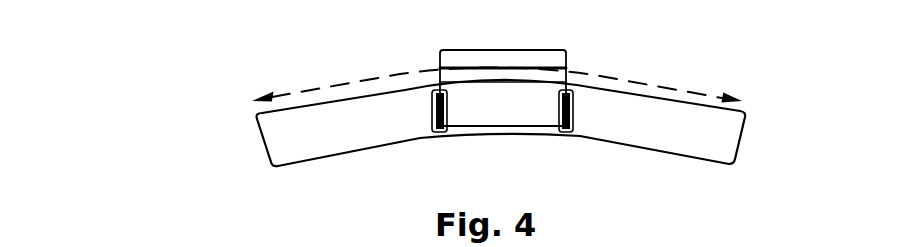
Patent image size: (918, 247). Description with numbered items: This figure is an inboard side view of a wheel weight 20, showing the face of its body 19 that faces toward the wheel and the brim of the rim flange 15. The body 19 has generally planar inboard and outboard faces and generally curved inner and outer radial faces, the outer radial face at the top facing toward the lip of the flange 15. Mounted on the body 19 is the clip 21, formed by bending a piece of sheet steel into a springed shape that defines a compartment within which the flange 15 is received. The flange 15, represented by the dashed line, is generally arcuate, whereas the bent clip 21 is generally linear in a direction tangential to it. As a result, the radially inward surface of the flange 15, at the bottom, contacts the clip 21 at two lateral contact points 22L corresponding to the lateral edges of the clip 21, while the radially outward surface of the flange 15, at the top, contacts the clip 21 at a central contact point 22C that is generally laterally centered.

The flange 15 is at (332, 83).
The body 19 is at (445, 91).
The weight 20 is at (815, 166).
The clip 21 is at (542, 91).
The lateral contact points 22L is at (577, 58).
The central contact point 22C is at (497, 68).